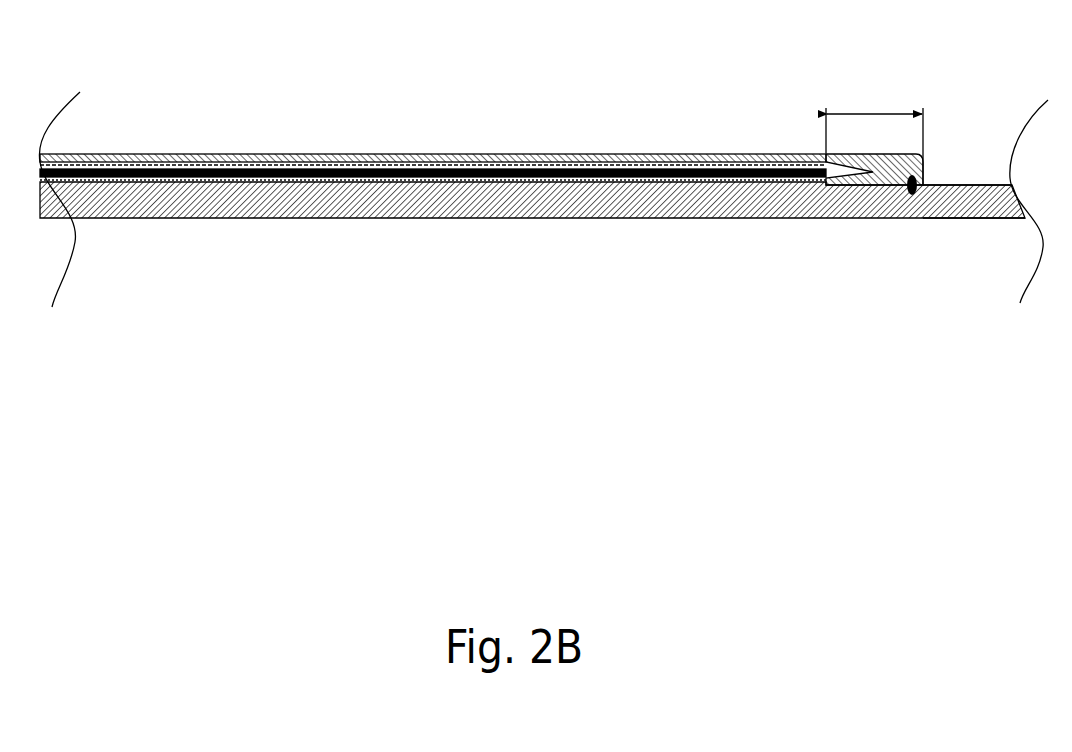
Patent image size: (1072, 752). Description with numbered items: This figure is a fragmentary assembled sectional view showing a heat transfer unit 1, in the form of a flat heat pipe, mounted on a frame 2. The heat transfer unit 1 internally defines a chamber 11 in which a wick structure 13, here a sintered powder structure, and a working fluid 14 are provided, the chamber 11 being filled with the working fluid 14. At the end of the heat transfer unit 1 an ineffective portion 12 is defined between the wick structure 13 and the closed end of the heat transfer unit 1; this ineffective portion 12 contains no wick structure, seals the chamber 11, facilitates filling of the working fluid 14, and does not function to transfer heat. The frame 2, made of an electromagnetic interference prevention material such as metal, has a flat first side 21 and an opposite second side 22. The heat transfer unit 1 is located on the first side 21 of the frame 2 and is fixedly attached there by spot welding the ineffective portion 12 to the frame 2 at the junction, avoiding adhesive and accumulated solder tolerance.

The heat transfer unit 1 is at (481, 99).
The chamber 11 is at (455, 165).
The ineffective portion 12 is at (876, 110).
The wick structure 13 is at (555, 160).
The working fluid 14 is at (250, 180).
The frame 2 is at (718, 212).
The first side 21 is at (973, 185).
The second side 22 is at (990, 218).